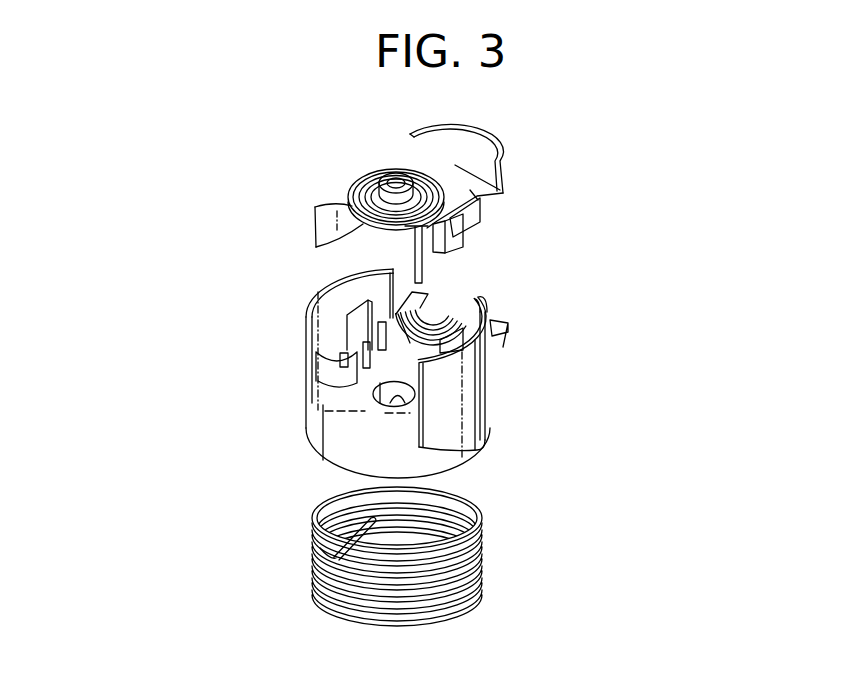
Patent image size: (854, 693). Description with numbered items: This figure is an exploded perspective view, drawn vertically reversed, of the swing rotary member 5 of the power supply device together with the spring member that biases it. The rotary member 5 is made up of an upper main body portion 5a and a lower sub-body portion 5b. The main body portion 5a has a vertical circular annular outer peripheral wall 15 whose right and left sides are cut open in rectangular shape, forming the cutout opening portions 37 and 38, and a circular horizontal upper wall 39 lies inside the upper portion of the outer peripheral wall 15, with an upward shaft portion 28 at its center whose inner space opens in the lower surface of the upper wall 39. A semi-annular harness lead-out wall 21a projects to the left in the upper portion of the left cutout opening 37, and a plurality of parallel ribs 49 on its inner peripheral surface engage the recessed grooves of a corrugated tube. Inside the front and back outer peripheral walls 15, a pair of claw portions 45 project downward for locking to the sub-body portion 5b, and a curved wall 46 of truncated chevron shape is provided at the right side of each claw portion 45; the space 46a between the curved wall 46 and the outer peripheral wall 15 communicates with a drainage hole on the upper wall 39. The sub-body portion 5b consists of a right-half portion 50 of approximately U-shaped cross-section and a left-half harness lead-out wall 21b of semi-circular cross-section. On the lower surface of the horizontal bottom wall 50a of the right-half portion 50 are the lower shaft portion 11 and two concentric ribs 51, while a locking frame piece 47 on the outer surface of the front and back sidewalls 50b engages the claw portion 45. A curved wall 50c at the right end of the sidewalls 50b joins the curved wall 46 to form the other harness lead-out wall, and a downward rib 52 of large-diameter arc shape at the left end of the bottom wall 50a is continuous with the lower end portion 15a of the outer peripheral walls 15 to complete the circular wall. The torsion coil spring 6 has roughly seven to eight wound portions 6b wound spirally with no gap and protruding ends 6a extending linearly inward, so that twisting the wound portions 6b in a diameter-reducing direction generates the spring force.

The rotary member 5 is at (570, 320).
The main body portion 5a is at (520, 392).
The sub-body portion 5b is at (503, 207).
The torsion coil spring 6 is at (487, 547).
The protruding end 6a is at (367, 540).
The wound portion 6b is at (433, 588).
The lower shaft portion 11 is at (393, 181).
The outer peripheral wall 15 is at (311, 350).
The lower end portion of outer peripheral wall 15a is at (332, 288).
The harness lead-out wall 21a is at (490, 360).
The harness lead-out wall 21b is at (501, 190).
The shaft portion 28 is at (392, 403).
The cutout opening portion 37 is at (470, 300).
The cutout opening portion 38 is at (430, 438).
The upper wall 39 is at (340, 420).
The claw portion 45 is at (360, 303).
The curved wall 46 is at (337, 380).
The space 46a is at (343, 360).
The locking frame piece 47 is at (462, 238).
The rib 49 is at (443, 294).
The right-half portion 50 is at (350, 192).
The bottom wall 50a is at (401, 165).
The sidewall 50b is at (452, 218).
The curved wall 50c is at (317, 223).
The concentric rib 51 is at (355, 190).
The downward rib 52 is at (412, 141).